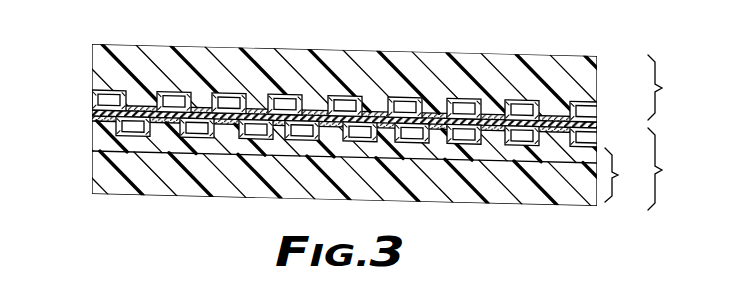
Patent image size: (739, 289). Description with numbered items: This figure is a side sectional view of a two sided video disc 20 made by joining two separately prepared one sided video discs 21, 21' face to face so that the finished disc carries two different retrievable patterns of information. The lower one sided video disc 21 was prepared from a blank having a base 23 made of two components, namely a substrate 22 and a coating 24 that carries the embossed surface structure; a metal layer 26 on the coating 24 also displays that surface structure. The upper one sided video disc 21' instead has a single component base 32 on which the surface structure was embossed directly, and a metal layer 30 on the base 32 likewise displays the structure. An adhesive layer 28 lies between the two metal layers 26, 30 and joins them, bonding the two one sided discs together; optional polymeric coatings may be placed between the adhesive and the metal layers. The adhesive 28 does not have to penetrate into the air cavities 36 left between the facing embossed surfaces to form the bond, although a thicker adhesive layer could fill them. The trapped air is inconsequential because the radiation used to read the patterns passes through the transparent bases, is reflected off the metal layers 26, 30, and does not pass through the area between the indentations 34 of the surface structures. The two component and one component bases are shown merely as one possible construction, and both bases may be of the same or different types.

The two sided video disc 20 is at (135, 200).
The one sided video disc 21 is at (672, 169).
The one sided video disc 21' is at (676, 87).
The substrate 22 is at (98, 169).
The base 23 is at (627, 175).
The coating 24 is at (97, 137).
The metal layer 26 is at (92, 117).
The adhesive layer 28 is at (597, 122).
The metal layer 30 is at (92, 91).
The single component base 32 is at (100, 55).
The indentations 34 is at (530, 100).
The air cavities 36 is at (228, 103).